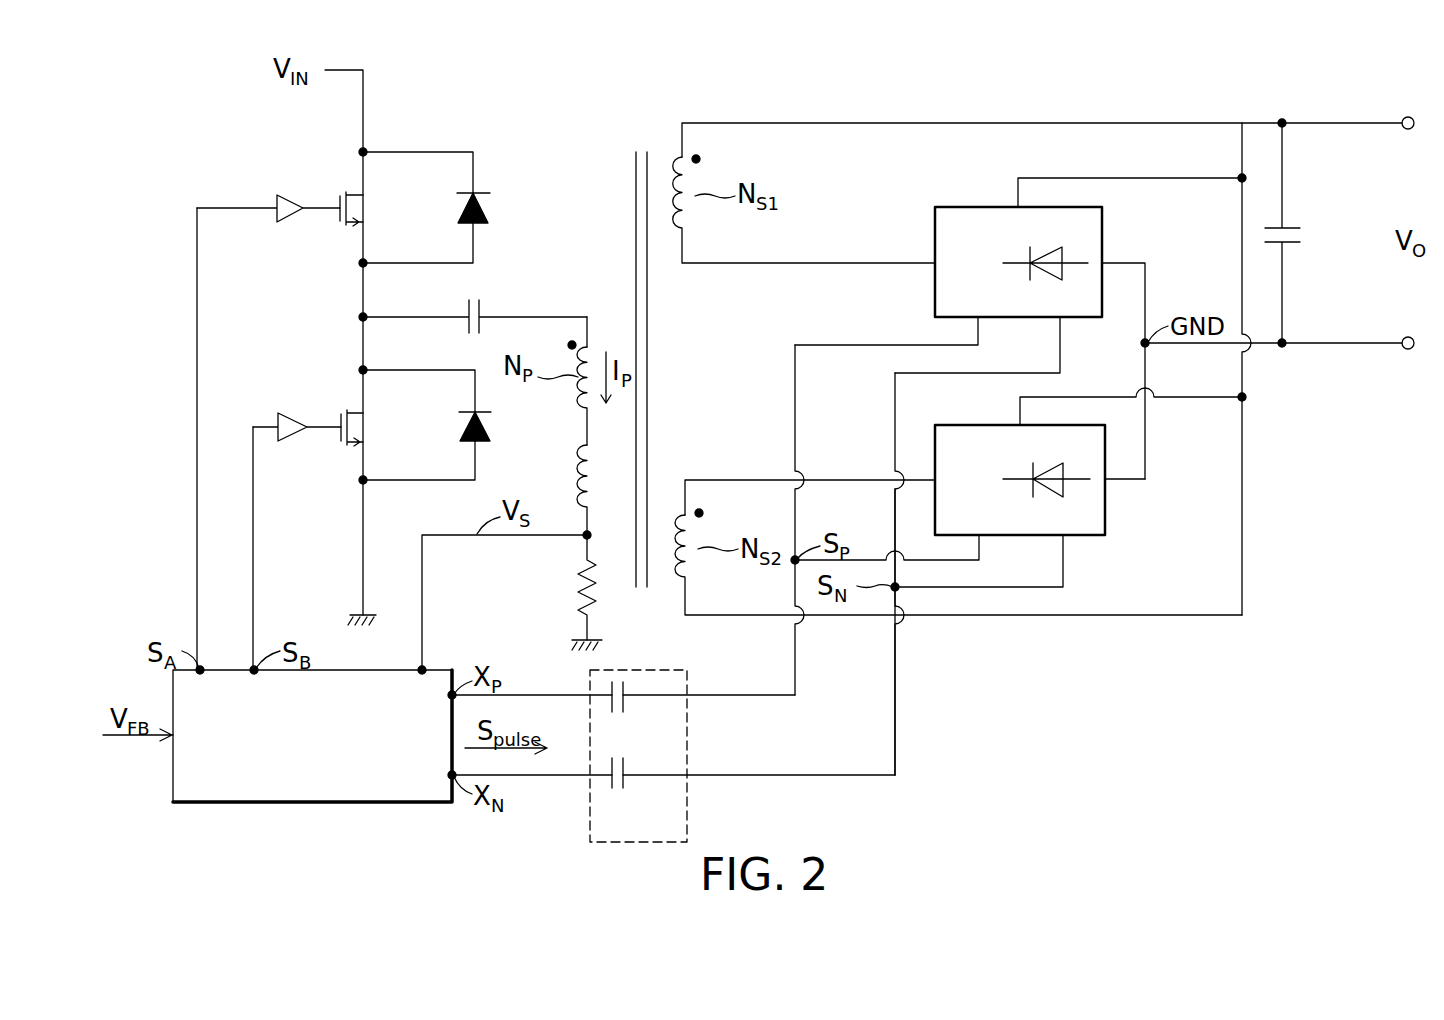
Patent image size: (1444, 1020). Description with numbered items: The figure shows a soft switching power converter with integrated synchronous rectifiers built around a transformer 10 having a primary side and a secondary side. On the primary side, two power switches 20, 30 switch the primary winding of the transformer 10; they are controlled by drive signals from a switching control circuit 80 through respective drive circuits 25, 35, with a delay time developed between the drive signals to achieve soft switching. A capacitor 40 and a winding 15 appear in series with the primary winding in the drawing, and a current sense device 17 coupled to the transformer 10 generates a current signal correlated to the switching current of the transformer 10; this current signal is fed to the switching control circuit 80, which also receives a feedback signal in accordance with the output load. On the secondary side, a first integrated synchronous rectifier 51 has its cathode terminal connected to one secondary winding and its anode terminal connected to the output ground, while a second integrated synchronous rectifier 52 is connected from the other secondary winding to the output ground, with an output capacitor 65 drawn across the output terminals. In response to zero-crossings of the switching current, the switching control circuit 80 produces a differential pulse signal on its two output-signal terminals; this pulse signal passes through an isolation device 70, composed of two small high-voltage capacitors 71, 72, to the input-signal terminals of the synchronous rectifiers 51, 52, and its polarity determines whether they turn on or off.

The transformer 10 is at (640, 150).
The auxiliary winding / inductor 15 is at (576, 476).
The current sense device 17 is at (578, 583).
The power switch 20 is at (366, 208).
The drive circuit 25 is at (290, 199).
The power switch 30 is at (368, 427).
The drive circuit 35 is at (290, 413).
The resonant capacitor 40 is at (473, 297).
The first integrated synchronous rectifier 51 is at (976, 207).
The second integrated synchronous rectifier 52 is at (976, 425).
The output capacitor 65 is at (1305, 235).
The isolation device 70 is at (645, 670).
The capacitor 71 is at (618, 712).
The capacitor 72 is at (618, 790).
The switching control circuit 80 is at (327, 754).